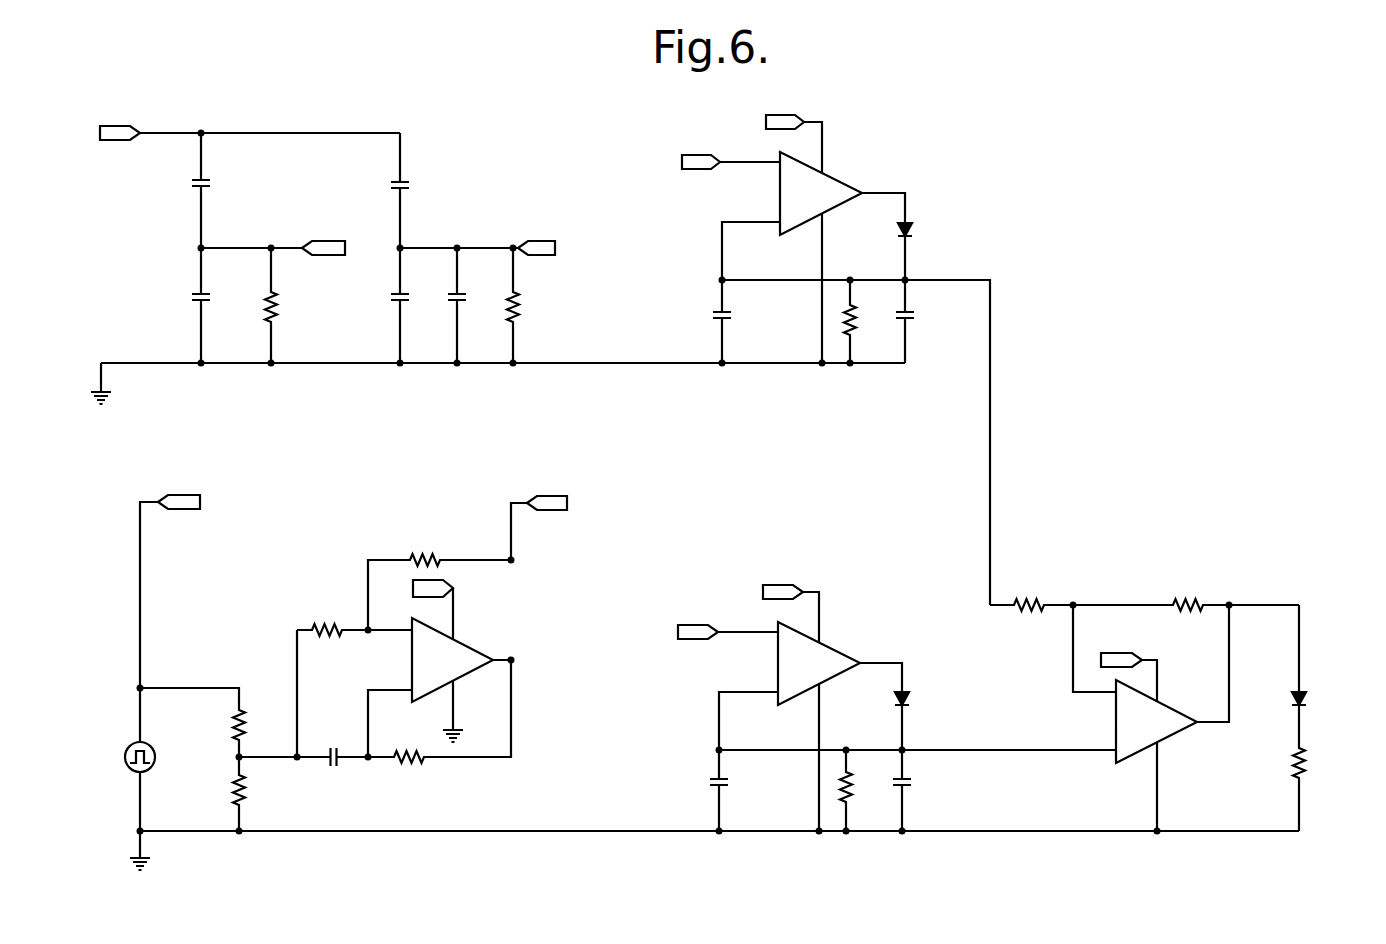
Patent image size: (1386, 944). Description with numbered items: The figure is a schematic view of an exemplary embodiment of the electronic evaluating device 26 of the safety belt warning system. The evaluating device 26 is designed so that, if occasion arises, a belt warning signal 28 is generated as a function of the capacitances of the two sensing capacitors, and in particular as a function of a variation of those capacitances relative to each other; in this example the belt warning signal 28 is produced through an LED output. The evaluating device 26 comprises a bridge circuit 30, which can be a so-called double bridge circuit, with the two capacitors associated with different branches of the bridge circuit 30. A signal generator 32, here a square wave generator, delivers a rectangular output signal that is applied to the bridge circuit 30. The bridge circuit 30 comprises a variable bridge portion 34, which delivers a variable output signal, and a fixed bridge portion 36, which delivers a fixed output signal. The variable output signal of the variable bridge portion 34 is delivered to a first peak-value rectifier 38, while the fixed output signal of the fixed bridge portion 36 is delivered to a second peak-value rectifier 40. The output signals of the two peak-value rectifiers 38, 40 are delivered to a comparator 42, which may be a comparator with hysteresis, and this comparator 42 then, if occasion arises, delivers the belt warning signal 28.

The electronic evaluating device 26 is at (977, 130).
The belt warning signal 28 is at (1310, 727).
The bridge circuit 30 is at (154, 247).
The signal generator 32 is at (134, 634).
The variable bridge portion 34 is at (432, 374).
The fixed bridge portion 36 is at (235, 374).
The first peak-value rectifier 38 is at (937, 238).
The second peak-value rectifier 40 is at (962, 553).
The comparator 42 is at (1270, 588).